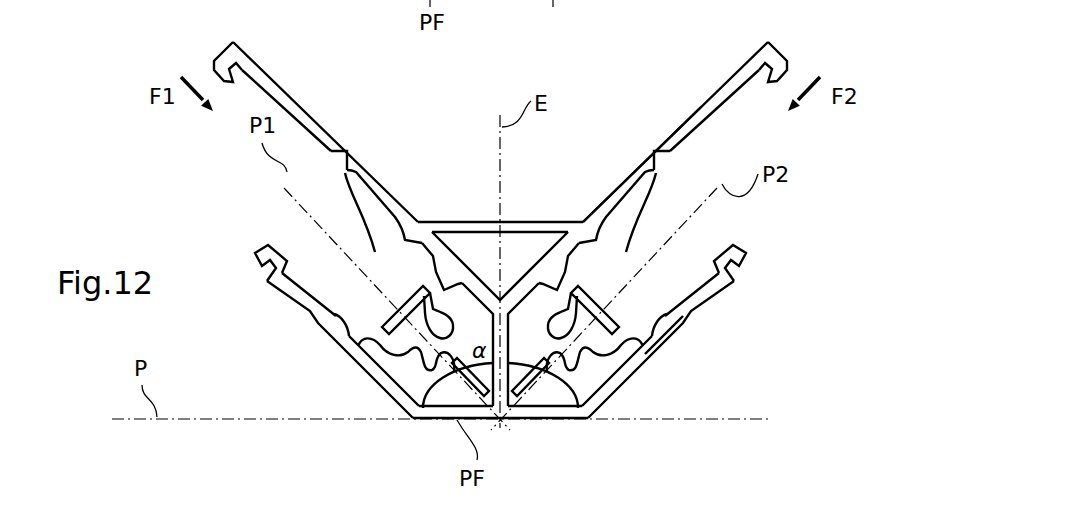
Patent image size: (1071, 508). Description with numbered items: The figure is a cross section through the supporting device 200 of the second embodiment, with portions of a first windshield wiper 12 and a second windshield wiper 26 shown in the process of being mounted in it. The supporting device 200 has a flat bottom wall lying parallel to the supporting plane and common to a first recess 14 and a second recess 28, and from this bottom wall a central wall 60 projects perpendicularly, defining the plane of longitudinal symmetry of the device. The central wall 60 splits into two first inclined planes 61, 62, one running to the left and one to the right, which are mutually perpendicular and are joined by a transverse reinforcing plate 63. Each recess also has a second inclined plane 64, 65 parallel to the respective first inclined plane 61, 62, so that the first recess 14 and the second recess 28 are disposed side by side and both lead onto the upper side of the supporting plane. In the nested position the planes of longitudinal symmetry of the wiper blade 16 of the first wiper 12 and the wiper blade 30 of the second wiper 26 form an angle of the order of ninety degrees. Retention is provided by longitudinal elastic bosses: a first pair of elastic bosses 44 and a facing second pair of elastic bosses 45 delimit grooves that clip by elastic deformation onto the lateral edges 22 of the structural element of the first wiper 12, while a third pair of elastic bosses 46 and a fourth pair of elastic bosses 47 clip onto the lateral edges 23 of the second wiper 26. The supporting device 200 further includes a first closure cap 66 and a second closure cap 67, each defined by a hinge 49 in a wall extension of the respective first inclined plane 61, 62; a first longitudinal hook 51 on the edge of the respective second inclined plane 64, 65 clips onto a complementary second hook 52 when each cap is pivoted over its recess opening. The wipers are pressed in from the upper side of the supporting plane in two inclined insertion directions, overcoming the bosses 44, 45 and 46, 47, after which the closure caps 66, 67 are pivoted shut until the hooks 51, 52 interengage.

The first windshield wiper 12 is at (352, 280).
The first recess 14 is at (391, 390).
The wiper blade 16 is at (428, 388).
The lateral edges 22 is at (373, 262).
The lateral edges 23 is at (664, 315).
The second windshield wiper 26 is at (627, 252).
The second recess 28 is at (606, 364).
The wiper blade 30 is at (547, 377).
The first pair of elastic bosses 44 is at (452, 265).
The second pair of elastic bosses 45 is at (336, 322).
The third pair of elastic bosses 46 is at (664, 322).
The fourth pair of elastic bosses 47 is at (543, 267).
The hinge 49 is at (347, 152).
The first longitudinal hook 51 is at (268, 270).
The second hook 52 is at (215, 62).
The central wall 60 is at (519, 388).
The first inclined plane 61 is at (407, 232).
The first inclined plane 62 is at (613, 191).
The transverse reinforcing plate 63 is at (516, 228).
The second inclined plane 64 is at (352, 362).
The second inclined plane 65 is at (664, 343).
The first closure cap 66 is at (290, 88).
The second closure cap 67 is at (712, 92).
The supporting device 200 is at (722, 305).